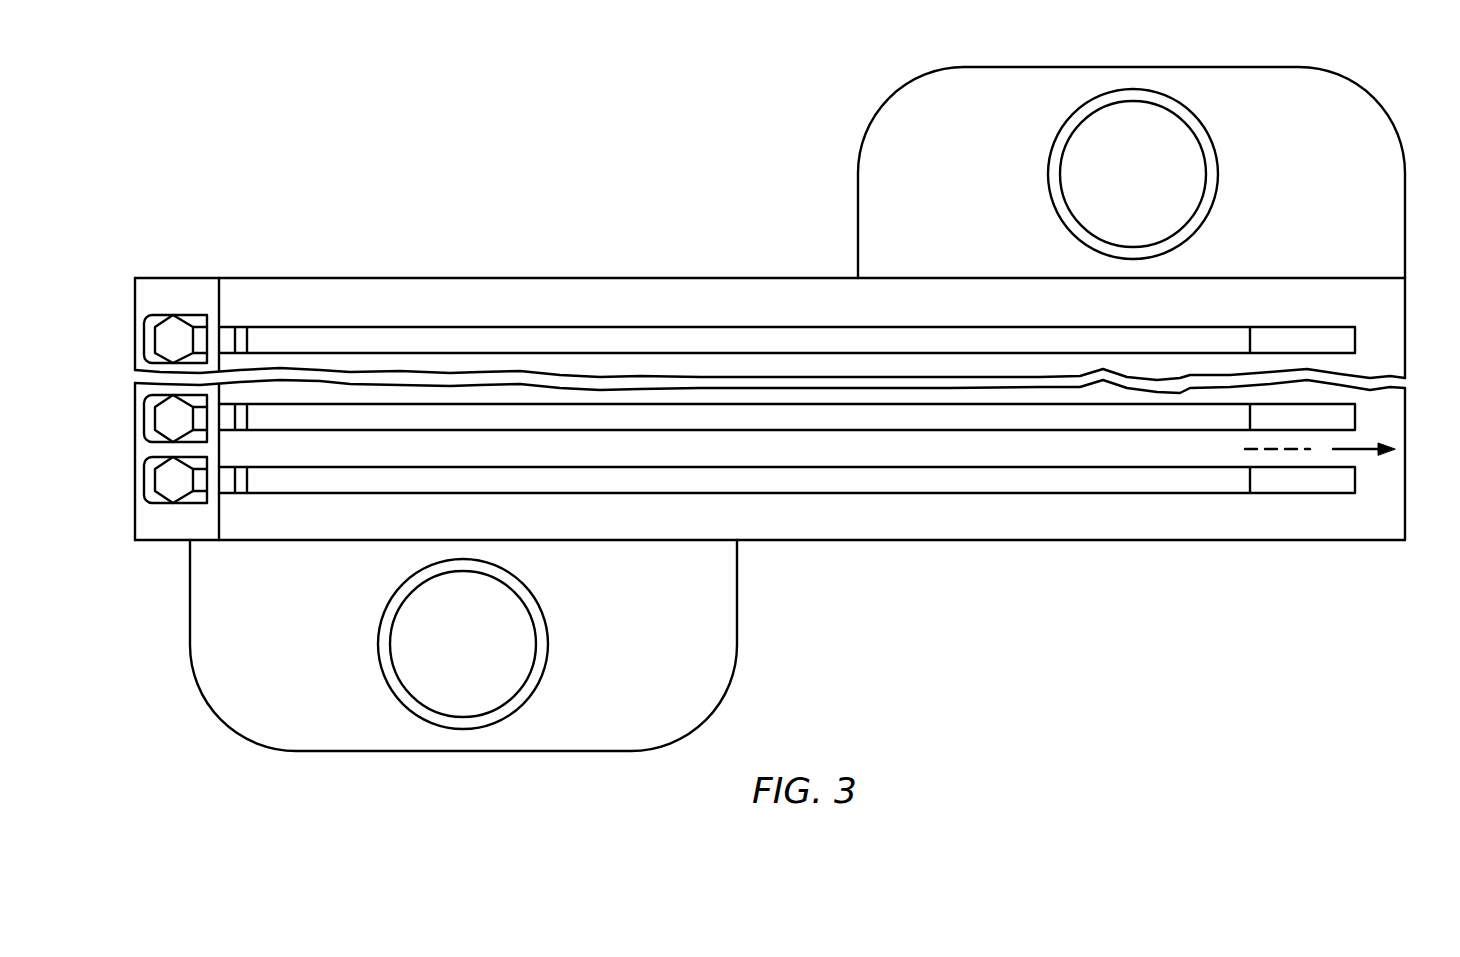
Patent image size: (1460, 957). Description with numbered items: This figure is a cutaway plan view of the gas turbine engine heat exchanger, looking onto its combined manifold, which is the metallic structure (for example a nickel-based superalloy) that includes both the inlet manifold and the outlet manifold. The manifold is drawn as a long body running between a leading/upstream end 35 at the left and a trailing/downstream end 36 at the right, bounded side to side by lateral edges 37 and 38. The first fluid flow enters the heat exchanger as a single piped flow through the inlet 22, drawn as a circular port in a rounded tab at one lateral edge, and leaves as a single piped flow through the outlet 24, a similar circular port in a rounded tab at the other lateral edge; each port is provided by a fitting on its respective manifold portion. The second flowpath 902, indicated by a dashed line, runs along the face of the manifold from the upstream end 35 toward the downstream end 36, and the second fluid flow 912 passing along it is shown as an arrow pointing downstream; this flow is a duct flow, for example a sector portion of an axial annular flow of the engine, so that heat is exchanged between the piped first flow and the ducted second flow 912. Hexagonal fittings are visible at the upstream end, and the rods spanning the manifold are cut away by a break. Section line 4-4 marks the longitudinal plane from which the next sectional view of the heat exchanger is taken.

The inlet 22 is at (1133, 135).
The outlet 24 is at (438, 683).
The leading/upstream end 35 is at (135, 518).
The trailing/downstream end 36 is at (1405, 505).
The lateral edge/end 37 is at (748, 278).
The lateral edge/end 38 is at (810, 540).
The second flowpath 902 is at (1287, 449).
The second fluid flow 912 is at (1365, 449).
The section line 4- 4 is at (125, 480).